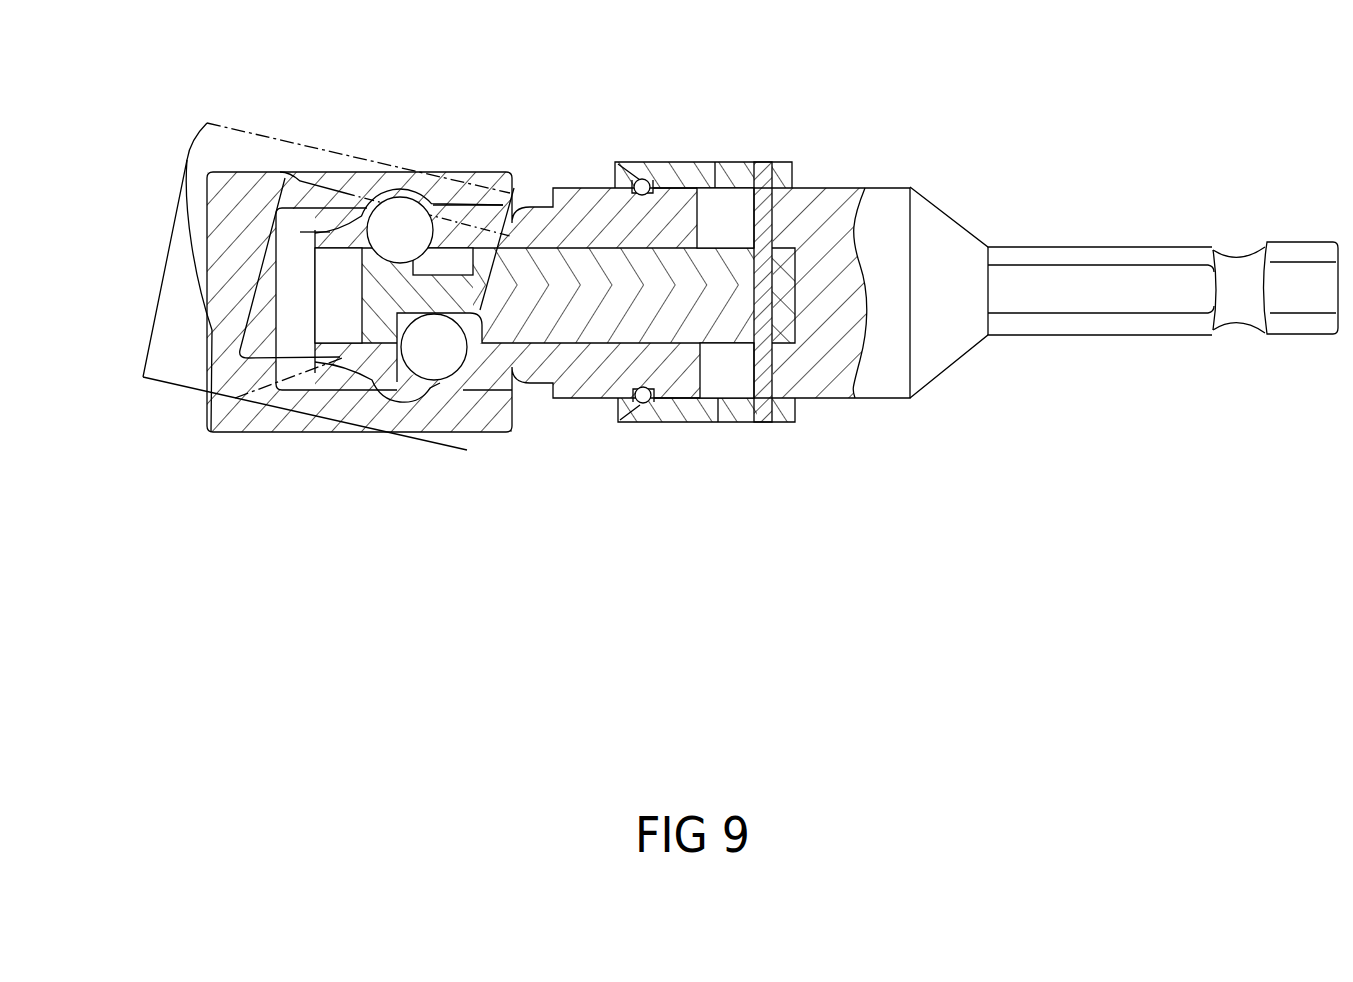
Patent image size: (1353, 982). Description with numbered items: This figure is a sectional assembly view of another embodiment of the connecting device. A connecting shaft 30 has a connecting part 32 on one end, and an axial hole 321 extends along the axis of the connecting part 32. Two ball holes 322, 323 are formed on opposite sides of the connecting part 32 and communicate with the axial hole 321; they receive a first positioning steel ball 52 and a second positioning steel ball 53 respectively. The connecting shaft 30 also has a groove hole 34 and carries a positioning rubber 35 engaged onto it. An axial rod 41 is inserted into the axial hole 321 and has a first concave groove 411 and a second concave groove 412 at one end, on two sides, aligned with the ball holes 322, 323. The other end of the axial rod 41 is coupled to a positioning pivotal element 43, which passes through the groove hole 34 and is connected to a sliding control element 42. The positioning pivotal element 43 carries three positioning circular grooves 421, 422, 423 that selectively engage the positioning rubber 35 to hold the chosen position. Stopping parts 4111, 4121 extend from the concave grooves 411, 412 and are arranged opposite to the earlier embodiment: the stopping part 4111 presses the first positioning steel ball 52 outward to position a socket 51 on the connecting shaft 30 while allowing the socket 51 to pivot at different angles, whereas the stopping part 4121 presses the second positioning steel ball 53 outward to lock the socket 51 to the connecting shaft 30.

The connecting shaft 30 is at (880, 208).
The connecting part 32 is at (350, 372).
The axial hole 321 is at (327, 278).
The first ball hole 322 is at (366, 206).
The second ball hole 323 is at (410, 385).
The groove hole 34 is at (733, 378).
The positioning rubber 35 is at (648, 402).
The axial rod 41 is at (290, 325).
The first concave groove 411 is at (456, 265).
The stopping part 4111 is at (335, 257).
The second concave groove 412 is at (497, 400).
The stopping part 4121 is at (472, 320).
The sliding control element 42 is at (740, 163).
The positioning circular groove 421 is at (712, 178).
The positioning circular groove 422 is at (672, 176).
The positioning circular groove 423 is at (632, 180).
The positioning pivotal element 43 is at (765, 420).
The socket 51 is at (235, 420).
The first positioning steel ball 52 is at (403, 222).
The second positioning steel ball 53 is at (436, 360).